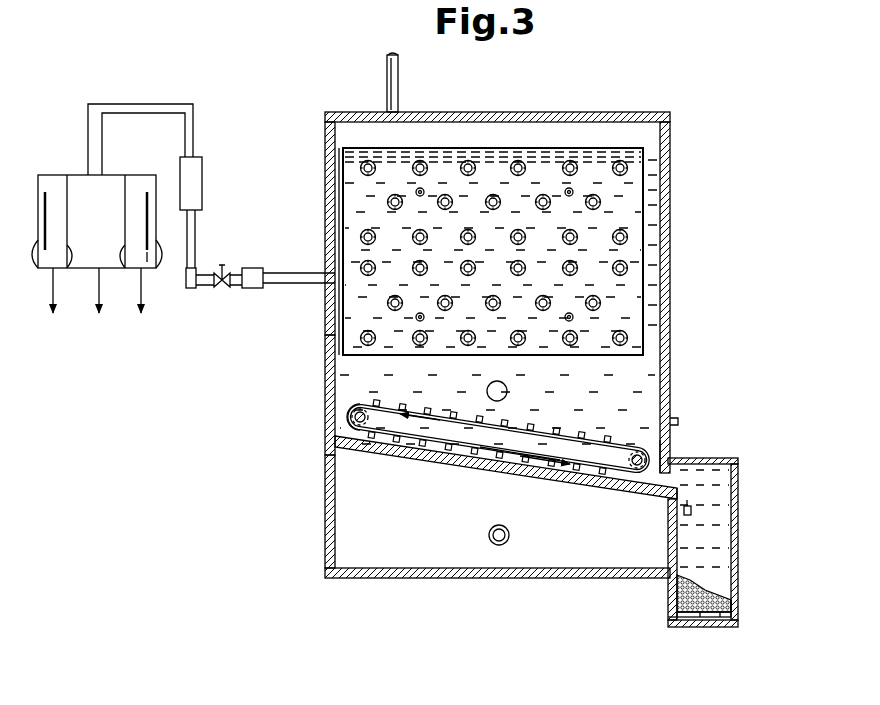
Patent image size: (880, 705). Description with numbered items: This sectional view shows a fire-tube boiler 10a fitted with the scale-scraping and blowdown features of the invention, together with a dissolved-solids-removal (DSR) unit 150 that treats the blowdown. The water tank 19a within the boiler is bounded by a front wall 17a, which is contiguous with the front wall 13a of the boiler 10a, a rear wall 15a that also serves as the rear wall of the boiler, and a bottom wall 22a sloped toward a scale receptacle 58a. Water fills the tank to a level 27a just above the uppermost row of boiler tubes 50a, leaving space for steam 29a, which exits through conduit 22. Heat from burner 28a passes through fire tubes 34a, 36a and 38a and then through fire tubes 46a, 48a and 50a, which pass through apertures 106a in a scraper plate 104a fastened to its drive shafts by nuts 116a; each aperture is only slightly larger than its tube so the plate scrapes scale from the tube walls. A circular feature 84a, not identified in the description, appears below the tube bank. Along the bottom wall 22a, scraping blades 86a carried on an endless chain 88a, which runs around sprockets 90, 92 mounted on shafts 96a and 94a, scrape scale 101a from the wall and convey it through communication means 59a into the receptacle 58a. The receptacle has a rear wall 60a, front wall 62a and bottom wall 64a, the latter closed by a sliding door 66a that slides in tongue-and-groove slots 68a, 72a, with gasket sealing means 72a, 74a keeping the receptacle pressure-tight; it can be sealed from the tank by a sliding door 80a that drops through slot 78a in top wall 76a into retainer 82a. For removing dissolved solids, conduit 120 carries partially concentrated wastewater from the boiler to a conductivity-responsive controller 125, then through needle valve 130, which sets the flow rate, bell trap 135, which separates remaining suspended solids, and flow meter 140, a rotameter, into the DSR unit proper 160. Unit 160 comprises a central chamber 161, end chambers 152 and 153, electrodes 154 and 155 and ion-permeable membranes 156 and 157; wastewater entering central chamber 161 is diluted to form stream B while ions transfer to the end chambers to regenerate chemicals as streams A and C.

The boiler 10a is at (700, 250).
The front wall of boiler 13a is at (330, 525).
The rear wall of tank 15a is at (672, 340).
The front wall of tank 17a is at (333, 315).
The tank 19a is at (333, 370).
The conduit 22 is at (387, 73).
The bottom wall 22a is at (487, 470).
The water level 27a is at (652, 150).
The burner 28a is at (489, 536).
The steam 29a is at (575, 122).
The fire tube 34a is at (360, 338).
The fire tube 36a is at (388, 303).
The fire tube 38a is at (360, 268).
The fire tube 46a is at (360, 237).
The fire tube 48a is at (388, 202).
The fire tube 50a is at (368, 160).
The scale receptacle 58a is at (740, 540).
The communication means 59a is at (677, 485).
The rear wall of receptacle 60a is at (738, 490).
The front wall of receptacle 62a is at (668, 596).
The bottom wall of receptacle 64a is at (722, 628).
The sliding door 66a is at (738, 598).
The tongue and groove slot 68a is at (738, 620).
The tongue and groove slot / sealing means 72a is at (668, 623).
The sealing means 74a is at (672, 628).
The top wall 76a is at (720, 458).
The slot 78a is at (676, 448).
The sliding door 80a is at (676, 420).
The retainer 82a is at (690, 515).
The opening 84a is at (525, 400).
The scraping blades 86a is at (455, 405).
The endless chain 88a is at (426, 450).
The sprocket 90 is at (372, 432).
The sprocket 92 is at (600, 487).
The driving shaft 94a is at (362, 410).
The shaft 96a is at (638, 447).
The scale 101a is at (705, 595).
The scraper plate 104a is at (360, 168).
The apertures 106a is at (507, 162).
The nuts 116a is at (569, 300).
The conduit 120 is at (196, 256).
The controller 125 is at (252, 290).
The needle valve 130 is at (222, 288).
The bell trap 135 is at (187, 288).
The flow meter 140 is at (202, 166).
The DSR unit 150 is at (220, 96).
The end chamber 152 is at (52, 178).
The end chamber 153 is at (138, 178).
The electrode 154 is at (39, 302).
The electrode 155 is at (150, 273).
The ion-permeable membrane 156 is at (83, 302).
The ion-permeable membrane 157 is at (121, 302).
The DSR unit 160 is at (122, 170).
The central chamber 161 is at (85, 178).